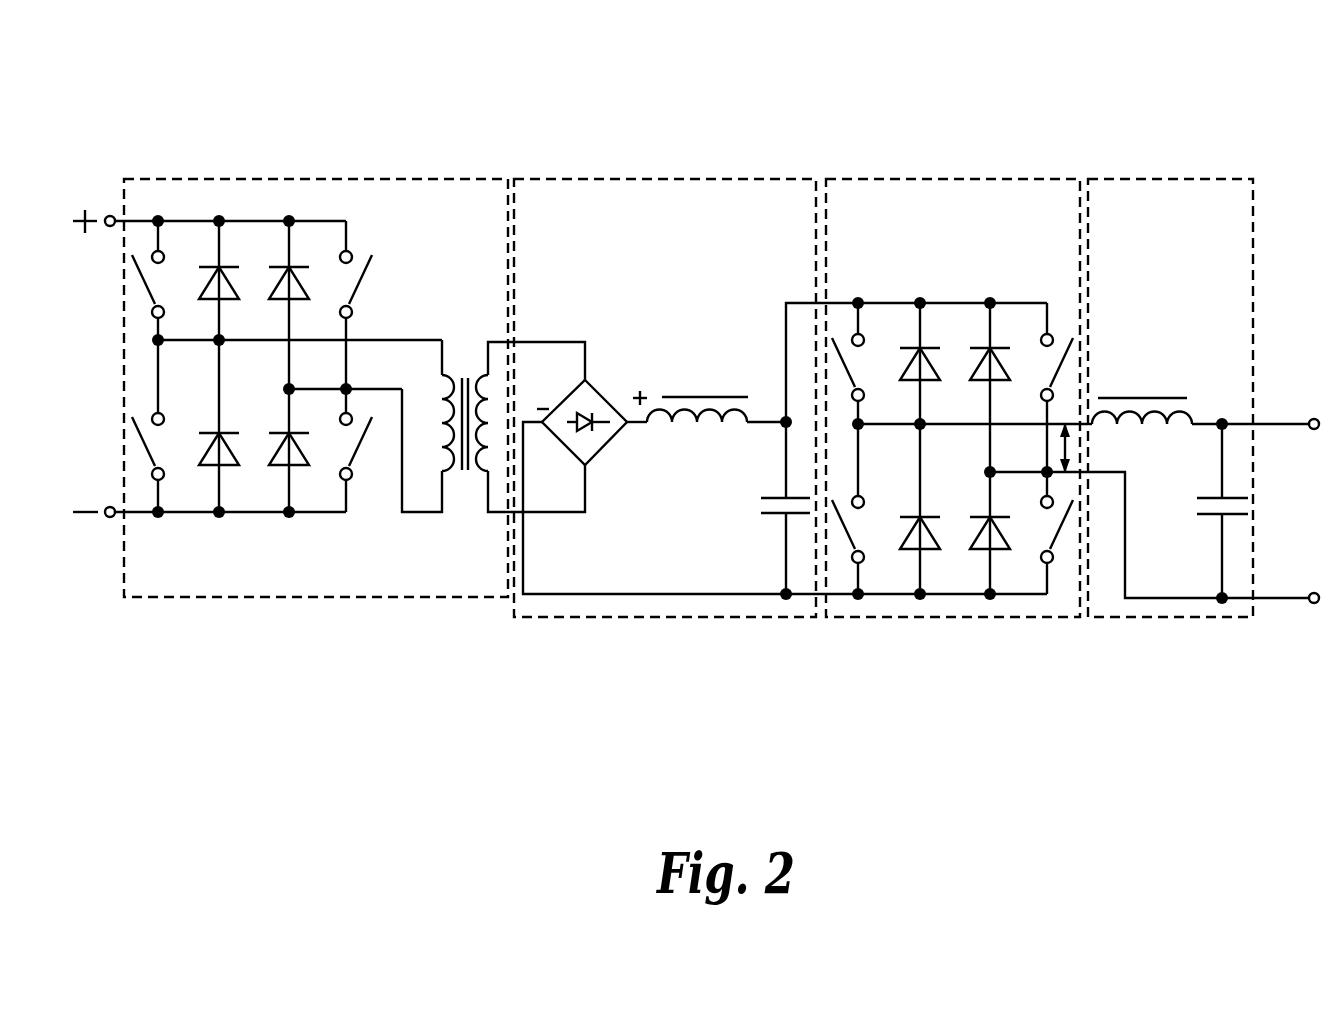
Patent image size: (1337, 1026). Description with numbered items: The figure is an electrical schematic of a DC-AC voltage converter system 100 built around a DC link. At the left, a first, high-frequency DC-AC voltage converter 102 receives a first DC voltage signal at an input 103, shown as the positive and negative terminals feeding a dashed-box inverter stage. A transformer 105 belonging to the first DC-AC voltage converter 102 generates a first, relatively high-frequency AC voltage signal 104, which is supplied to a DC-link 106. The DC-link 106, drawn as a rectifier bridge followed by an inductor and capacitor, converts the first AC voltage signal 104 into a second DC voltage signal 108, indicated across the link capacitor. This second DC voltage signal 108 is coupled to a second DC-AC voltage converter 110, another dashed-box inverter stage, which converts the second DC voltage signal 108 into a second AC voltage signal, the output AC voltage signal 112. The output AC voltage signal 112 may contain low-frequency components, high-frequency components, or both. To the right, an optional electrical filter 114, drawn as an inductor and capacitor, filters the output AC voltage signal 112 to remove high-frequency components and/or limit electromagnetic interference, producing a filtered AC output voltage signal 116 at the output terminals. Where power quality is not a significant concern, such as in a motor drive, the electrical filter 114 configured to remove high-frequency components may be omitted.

The DC-AC voltage converter system 100 is at (522, 63).
The first DC-AC voltage converter 102 is at (374, 178).
The input 103 is at (82, 348).
The first AC voltage signal 104 is at (535, 342).
The transformer 105 is at (465, 514).
The DC-link 106 is at (678, 178).
The second DC voltage signal 108 is at (753, 422).
The second DC-AC voltage converter 110 is at (956, 178).
The output AC voltage signal 112 is at (1068, 447).
The electrical filter 114 is at (1189, 178).
The filtered AC output voltage signal 116 is at (1314, 431).